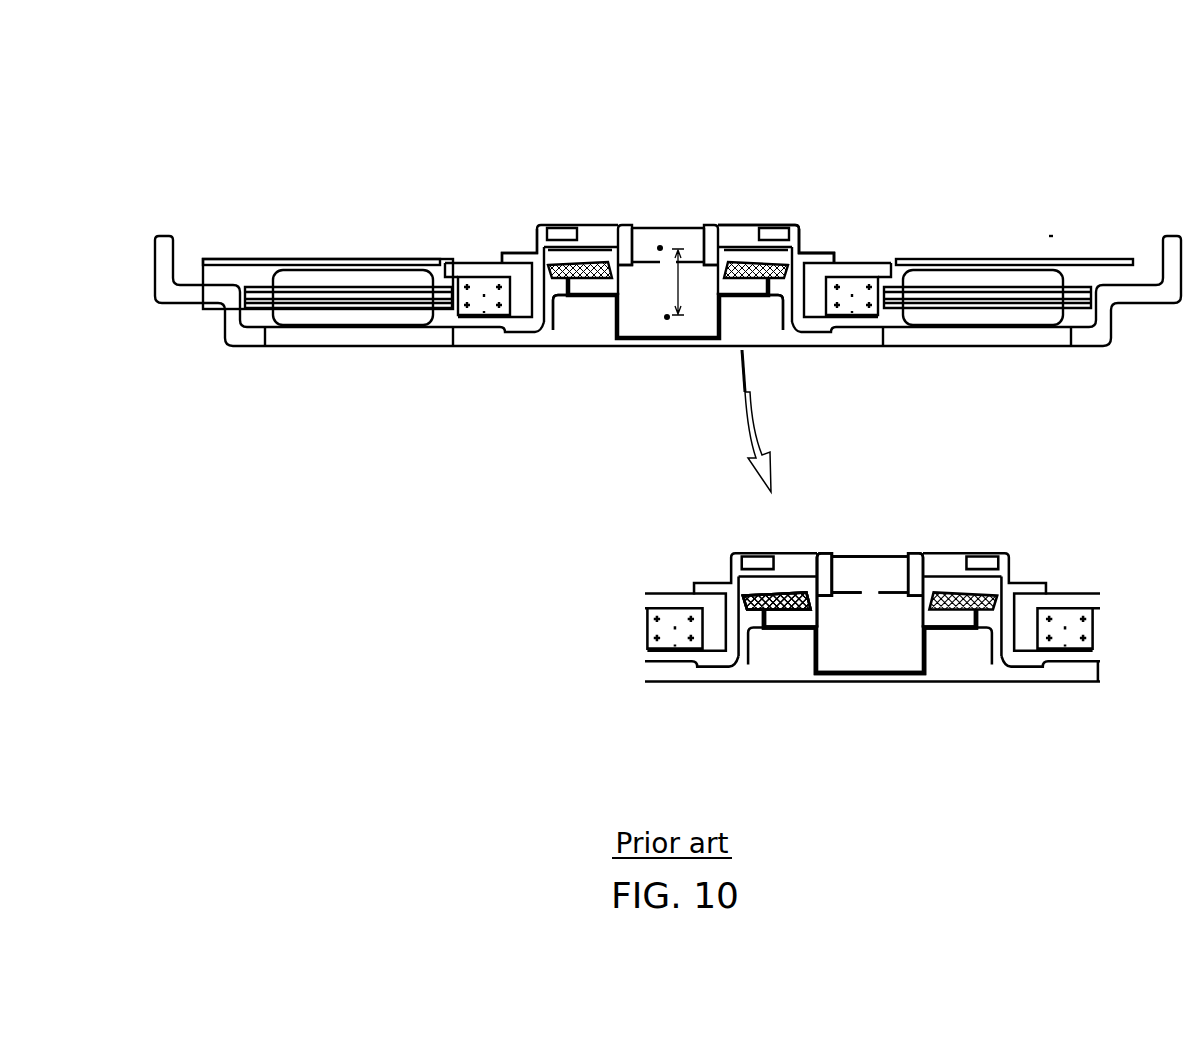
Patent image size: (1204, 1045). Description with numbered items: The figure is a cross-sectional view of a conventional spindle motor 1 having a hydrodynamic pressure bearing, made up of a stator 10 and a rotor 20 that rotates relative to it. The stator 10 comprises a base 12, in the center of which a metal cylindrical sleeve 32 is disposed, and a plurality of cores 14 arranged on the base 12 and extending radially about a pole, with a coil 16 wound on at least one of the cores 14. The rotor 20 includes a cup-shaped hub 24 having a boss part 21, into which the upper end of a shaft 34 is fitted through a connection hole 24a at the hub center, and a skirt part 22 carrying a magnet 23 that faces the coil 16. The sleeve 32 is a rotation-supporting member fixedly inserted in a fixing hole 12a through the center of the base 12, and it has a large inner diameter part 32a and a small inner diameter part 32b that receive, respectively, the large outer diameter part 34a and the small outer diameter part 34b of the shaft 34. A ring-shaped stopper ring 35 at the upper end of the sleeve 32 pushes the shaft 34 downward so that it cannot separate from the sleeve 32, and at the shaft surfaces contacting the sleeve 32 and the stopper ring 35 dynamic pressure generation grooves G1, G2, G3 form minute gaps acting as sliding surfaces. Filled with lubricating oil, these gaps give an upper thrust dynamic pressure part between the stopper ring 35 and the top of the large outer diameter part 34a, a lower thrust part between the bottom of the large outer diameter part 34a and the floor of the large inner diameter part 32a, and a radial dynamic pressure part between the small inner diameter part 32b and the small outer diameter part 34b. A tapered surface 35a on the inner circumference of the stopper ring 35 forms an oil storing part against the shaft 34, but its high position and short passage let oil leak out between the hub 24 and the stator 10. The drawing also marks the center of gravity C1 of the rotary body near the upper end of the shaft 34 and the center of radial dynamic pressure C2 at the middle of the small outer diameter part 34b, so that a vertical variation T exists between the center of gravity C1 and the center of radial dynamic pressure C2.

The spindle motor 1 is at (1085, 77).
The stator 10 is at (364, 175).
The base 12 is at (212, 292).
The fixing hole 12a is at (556, 328).
The cores 14 is at (352, 295).
The coil 16 is at (402, 272).
The rotor 20 is at (893, 145).
The boss part 21 is at (732, 232).
The skirt part 22 is at (826, 254).
The magnet 23 is at (866, 286).
The hub 24 is at (805, 250).
The connection hole 24a is at (690, 229).
The sleeve 32 is at (592, 340).
The large inner diameter part 32a is at (795, 675).
The small inner diameter part 32b is at (935, 680).
The shaft 34 is at (657, 227).
The large outer diameter part 34a is at (948, 675).
The small outer diameter part 34b is at (847, 657).
The stopper ring 35 is at (600, 262).
The tapered surface 35a is at (592, 255).
The center of gravity C1 is at (660, 248).
The center of radial dynamic pressure C2 is at (667, 317).
The vertical variation T is at (684, 282).
The dynamic pressure generation groove G1 is at (793, 600).
The dynamic pressure generation groove G2 is at (800, 605).
The dynamic pressure generation groove G3 is at (828, 640).